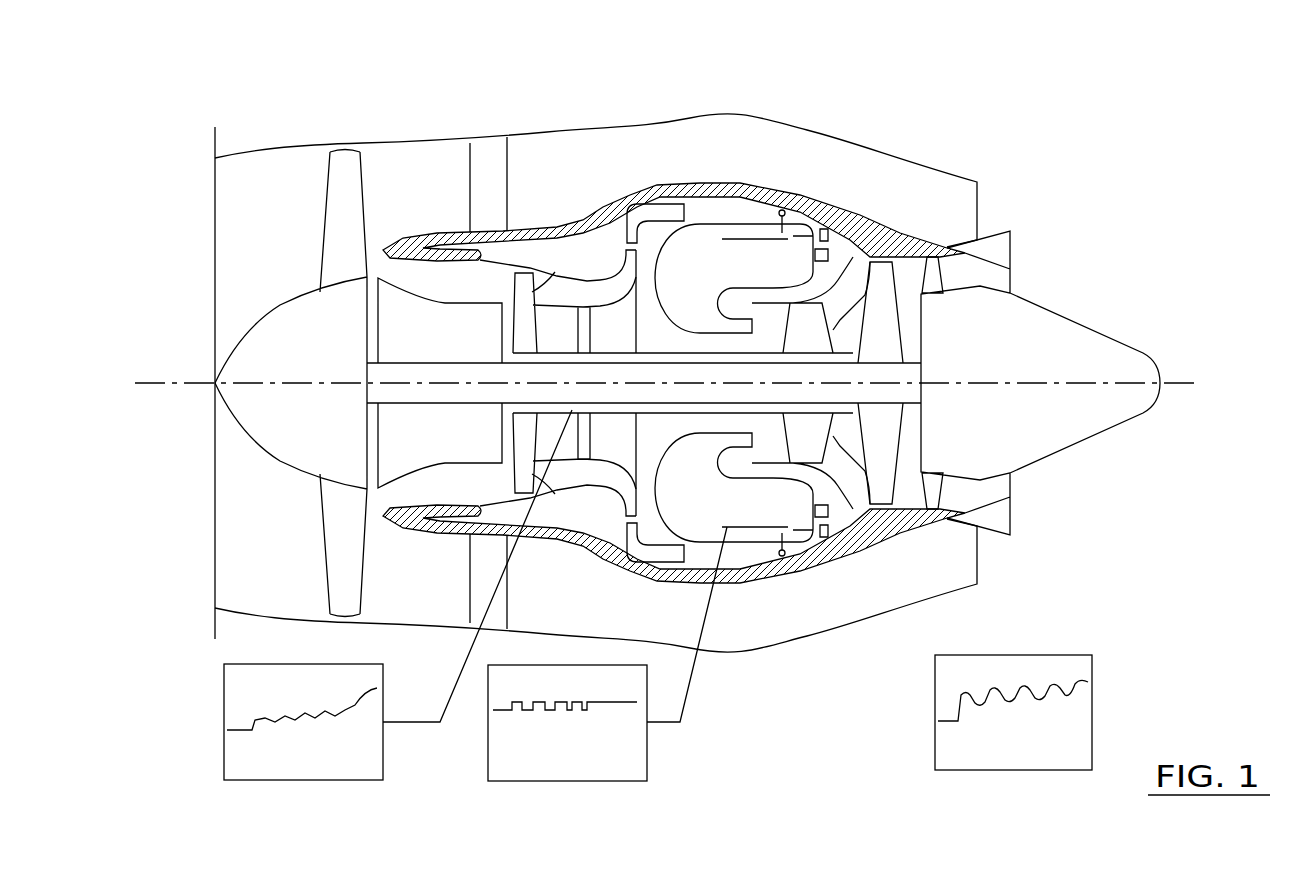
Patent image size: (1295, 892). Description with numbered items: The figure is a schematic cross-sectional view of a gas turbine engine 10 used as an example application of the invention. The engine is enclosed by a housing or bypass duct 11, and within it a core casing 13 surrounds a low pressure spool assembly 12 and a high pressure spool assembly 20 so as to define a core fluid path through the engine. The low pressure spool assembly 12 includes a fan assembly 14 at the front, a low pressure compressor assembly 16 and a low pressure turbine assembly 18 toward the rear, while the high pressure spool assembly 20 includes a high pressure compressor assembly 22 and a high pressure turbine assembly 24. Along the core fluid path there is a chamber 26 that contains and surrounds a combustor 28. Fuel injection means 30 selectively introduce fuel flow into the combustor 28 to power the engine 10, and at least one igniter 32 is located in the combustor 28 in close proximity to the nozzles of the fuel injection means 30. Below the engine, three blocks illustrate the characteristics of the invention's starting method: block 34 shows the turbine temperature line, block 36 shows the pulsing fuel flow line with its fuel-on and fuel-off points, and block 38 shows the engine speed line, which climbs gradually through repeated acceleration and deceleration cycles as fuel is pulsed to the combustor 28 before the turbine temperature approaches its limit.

The gas turbine engine 10 is at (650, 98).
The bypass duct 11 is at (690, 118).
The low pressure spool assembly 12 is at (447, 363).
The core casing 13 is at (657, 183).
The fan assembly 14 is at (323, 200).
The low pressure compressor assembly 16 is at (396, 323).
The low pressure turbine assembly 18 is at (908, 277).
The high pressure spool assembly 20 is at (573, 352).
The high pressure compressor assembly 22 is at (551, 275).
The high pressure turbine assembly 24 is at (838, 260).
The chamber 26 is at (743, 215).
The combustor 28 is at (758, 243).
The fuel injection means 30 is at (840, 473).
The igniter 32 is at (782, 556).
The block showing line TT1 34 is at (1065, 655).
The block showing line FF1 36 is at (650, 755).
The block showing line ES1 38 is at (224, 710).